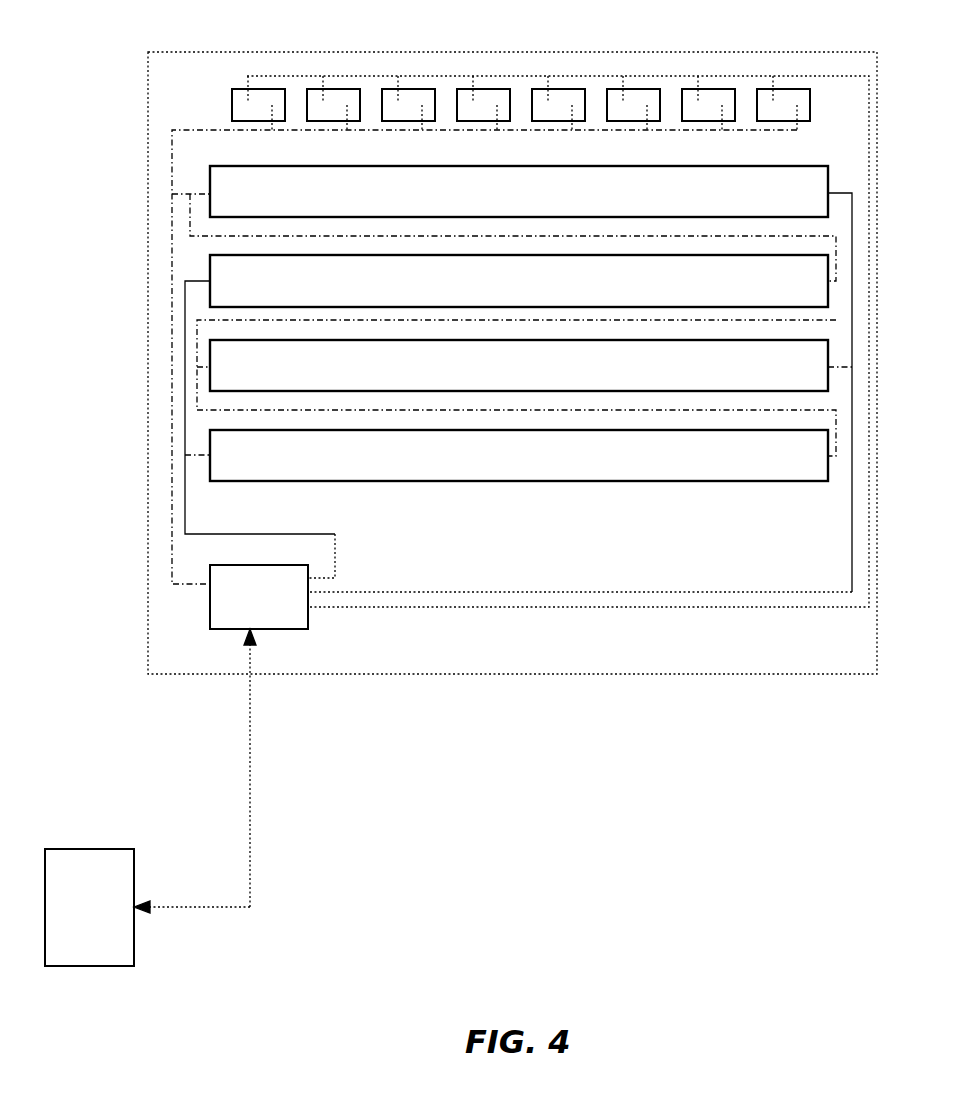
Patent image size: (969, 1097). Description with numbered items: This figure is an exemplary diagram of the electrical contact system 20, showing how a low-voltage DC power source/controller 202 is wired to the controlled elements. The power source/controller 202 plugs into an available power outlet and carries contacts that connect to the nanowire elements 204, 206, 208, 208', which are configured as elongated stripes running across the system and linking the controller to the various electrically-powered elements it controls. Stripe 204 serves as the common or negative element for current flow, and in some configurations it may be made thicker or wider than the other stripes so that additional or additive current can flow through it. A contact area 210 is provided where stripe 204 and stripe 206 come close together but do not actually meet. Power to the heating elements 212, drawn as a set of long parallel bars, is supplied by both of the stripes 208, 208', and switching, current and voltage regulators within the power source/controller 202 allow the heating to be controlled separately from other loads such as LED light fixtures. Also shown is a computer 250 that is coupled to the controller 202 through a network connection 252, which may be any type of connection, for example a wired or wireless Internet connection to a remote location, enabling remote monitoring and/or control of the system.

The display device 20 is at (175, 88).
The power source/controller 202 is at (285, 632).
The stripe 204 is at (172, 549).
The nanowire element 206 is at (492, 610).
The stripe 208 is at (580, 392).
The stripe 208' is at (300, 429).
The contact area 210 is at (235, 105).
The heating elements 212 is at (545, 178).
The computer 250 is at (88, 848).
The network connection 252 is at (250, 792).